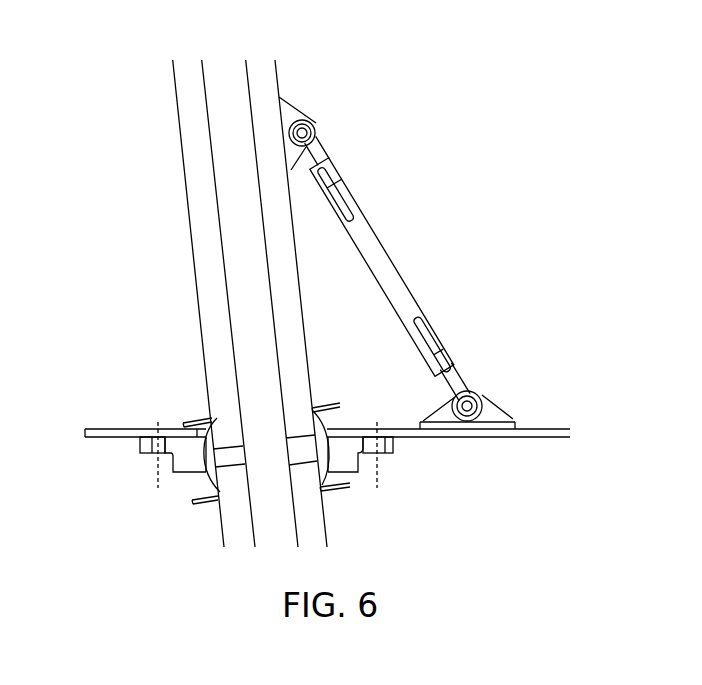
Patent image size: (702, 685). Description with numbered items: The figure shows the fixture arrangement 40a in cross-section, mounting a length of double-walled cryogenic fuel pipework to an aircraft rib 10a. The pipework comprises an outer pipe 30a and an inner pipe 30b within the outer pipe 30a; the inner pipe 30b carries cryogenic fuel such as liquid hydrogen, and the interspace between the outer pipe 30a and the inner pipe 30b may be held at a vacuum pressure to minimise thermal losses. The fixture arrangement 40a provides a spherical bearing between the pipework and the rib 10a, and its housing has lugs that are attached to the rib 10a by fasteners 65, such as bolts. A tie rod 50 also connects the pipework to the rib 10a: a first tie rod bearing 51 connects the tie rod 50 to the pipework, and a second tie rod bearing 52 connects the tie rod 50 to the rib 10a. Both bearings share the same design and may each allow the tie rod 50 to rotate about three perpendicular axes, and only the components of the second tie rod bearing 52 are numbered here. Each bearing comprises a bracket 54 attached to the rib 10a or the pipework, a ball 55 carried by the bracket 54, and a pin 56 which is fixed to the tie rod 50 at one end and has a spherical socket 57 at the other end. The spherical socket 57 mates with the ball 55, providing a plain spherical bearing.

The rib 10a is at (92, 438).
The outer pipe 30a is at (183, 186).
The inner pipe 30b is at (225, 292).
The fixture arrangement 40a is at (176, 418).
The tie rod 50 is at (390, 275).
The first tie rod bearing 51 is at (331, 119).
The second tie rod bearing 52 is at (505, 393).
The bracket 54 is at (498, 413).
The ball 55 is at (484, 426).
The pin 56 is at (432, 373).
The spherical socket 57 is at (474, 392).
The fasteners 65 is at (156, 461).